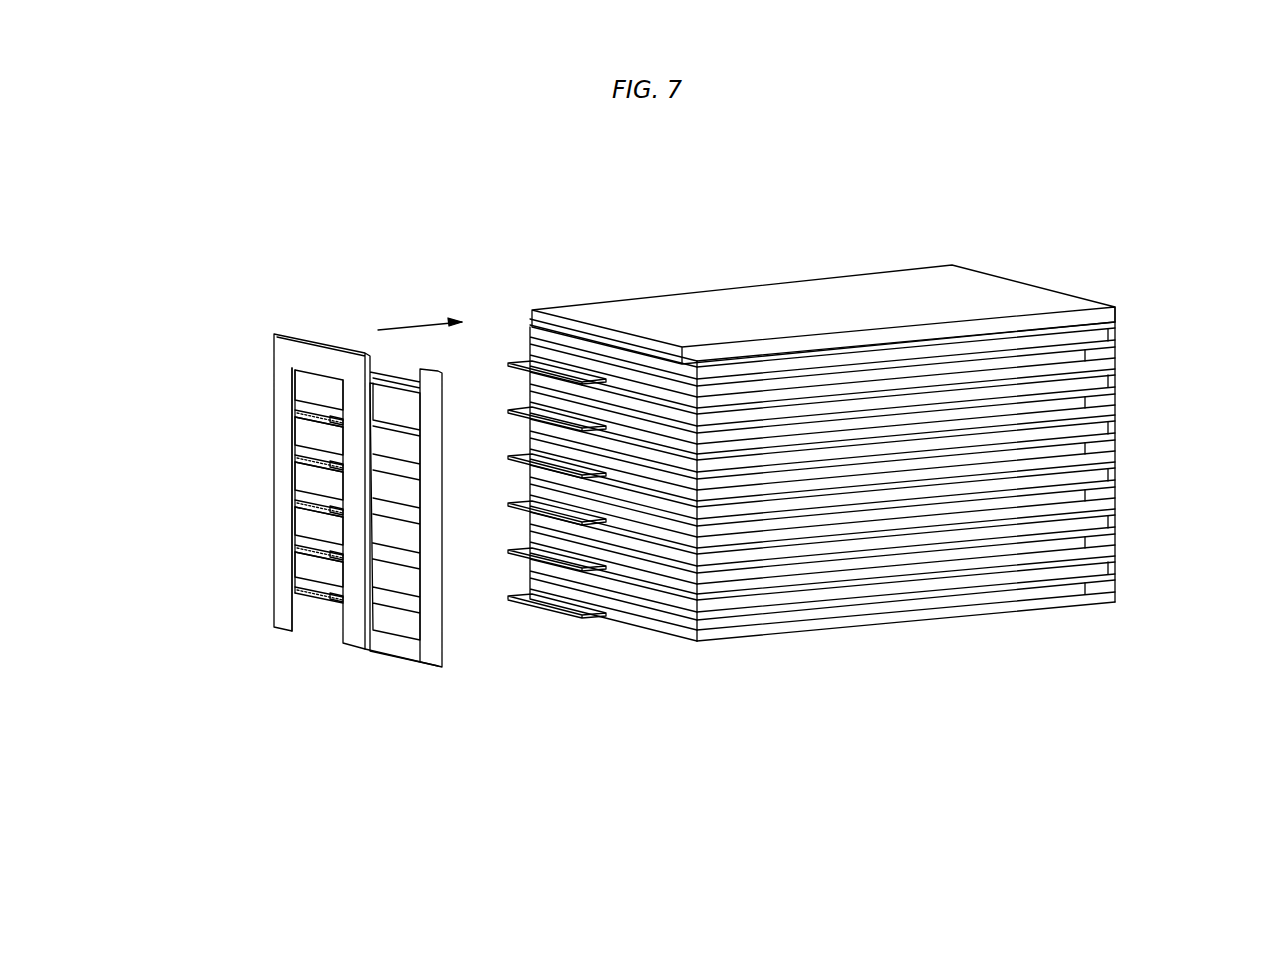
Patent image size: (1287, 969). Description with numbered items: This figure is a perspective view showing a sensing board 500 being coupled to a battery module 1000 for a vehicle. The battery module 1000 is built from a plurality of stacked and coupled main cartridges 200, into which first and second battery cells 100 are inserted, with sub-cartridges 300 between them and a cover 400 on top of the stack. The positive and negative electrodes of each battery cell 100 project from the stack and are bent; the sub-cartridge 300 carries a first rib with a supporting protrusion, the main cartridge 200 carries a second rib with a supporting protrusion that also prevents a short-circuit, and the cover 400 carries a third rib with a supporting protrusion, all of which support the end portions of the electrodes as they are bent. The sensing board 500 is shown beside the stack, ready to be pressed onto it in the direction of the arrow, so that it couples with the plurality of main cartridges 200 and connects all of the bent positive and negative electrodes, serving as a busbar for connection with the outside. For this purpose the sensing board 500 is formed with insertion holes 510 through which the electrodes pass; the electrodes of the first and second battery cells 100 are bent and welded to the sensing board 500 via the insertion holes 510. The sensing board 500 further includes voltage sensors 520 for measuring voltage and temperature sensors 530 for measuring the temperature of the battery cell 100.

The battery module 1000 is at (426, 200).
The battery cell 100 is at (968, 552).
The main cartridge 200 is at (1105, 355).
The sub-cartridge 300 is at (732, 603).
The cover 400 is at (965, 287).
The sensing board 500 is at (279, 328).
The insertion hole 510 is at (313, 396).
The voltage sensor 520 is at (293, 410).
The temperature sensor 530 is at (340, 462).